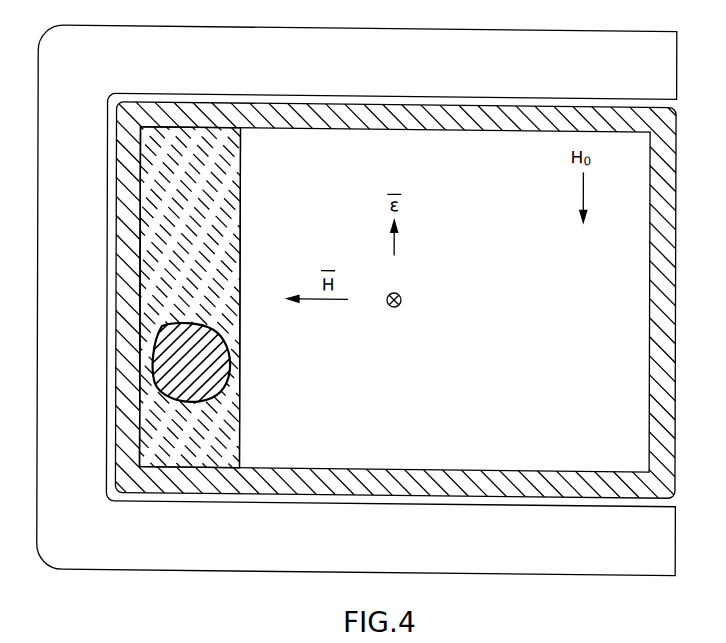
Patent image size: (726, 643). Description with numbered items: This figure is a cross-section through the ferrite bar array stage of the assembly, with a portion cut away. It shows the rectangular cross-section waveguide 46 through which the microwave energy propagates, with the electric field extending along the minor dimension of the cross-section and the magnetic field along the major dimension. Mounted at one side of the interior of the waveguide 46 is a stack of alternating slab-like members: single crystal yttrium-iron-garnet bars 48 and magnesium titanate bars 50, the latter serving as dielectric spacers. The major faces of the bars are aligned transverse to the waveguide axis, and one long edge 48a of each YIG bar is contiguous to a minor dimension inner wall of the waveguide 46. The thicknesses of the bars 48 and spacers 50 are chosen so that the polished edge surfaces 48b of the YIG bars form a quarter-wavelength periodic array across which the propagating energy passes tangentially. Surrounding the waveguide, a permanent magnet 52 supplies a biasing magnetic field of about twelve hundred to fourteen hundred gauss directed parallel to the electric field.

The permanent magnet 52 is at (486, 30).
The waveguide 46 is at (520, 111).
The YIG bar 48 is at (232, 246).
The long edge of YIG bar 48a is at (139, 271).
The edge surface of YIG bar 48b is at (240, 416).
The magnesium titanate bar 50 is at (218, 373).